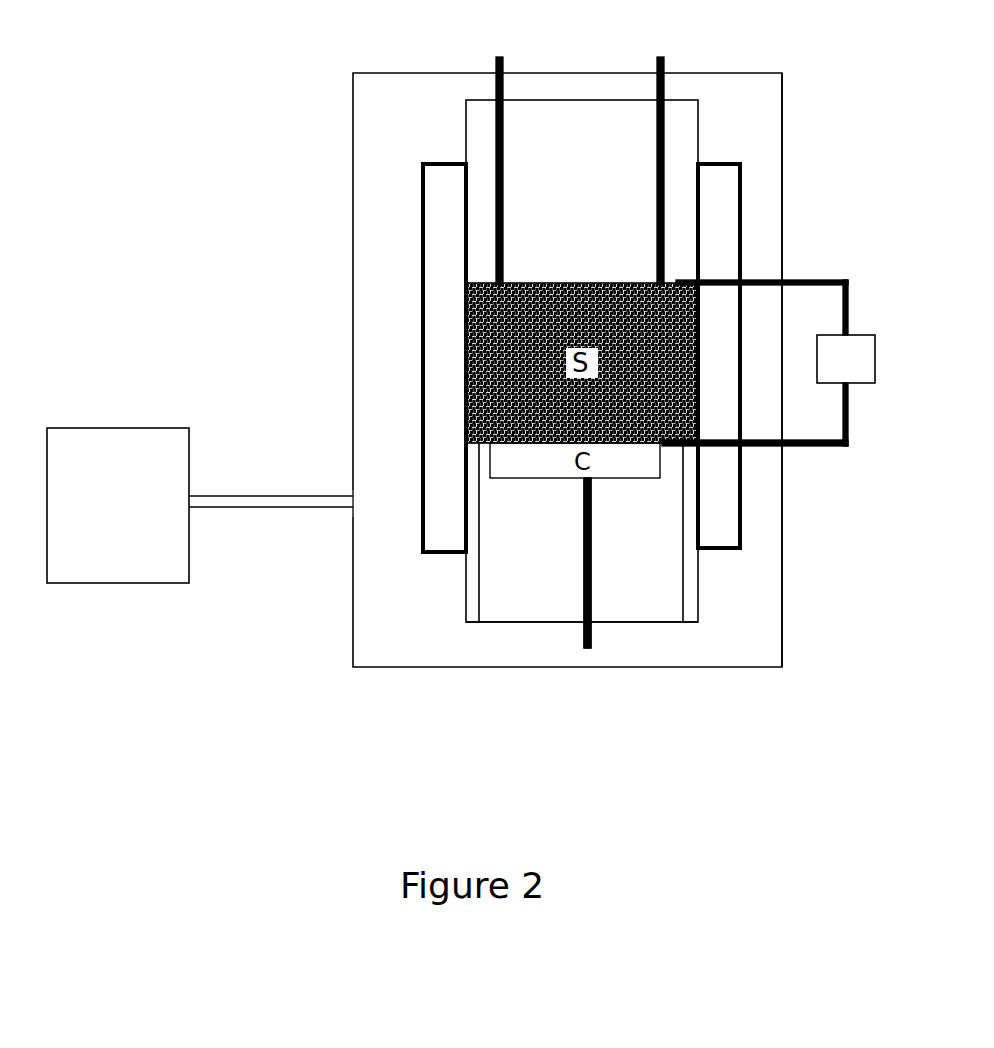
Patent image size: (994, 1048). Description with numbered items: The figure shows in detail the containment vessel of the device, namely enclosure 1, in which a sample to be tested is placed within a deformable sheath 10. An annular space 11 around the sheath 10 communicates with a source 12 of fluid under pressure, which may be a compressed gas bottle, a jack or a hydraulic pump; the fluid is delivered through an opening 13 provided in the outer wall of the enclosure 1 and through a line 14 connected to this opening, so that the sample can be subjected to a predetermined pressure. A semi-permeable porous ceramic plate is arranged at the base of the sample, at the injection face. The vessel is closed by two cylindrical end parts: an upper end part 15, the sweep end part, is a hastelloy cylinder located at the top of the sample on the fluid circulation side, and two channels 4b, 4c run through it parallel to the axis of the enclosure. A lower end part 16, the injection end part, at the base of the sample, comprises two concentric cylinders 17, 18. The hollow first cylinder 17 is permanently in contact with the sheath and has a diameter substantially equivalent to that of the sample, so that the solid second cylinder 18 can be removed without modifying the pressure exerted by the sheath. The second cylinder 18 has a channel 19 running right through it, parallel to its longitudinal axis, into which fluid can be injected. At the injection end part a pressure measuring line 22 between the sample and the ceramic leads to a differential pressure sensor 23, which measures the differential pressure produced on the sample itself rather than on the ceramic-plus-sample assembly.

The enclosure 1 is at (783, 131).
The channel 4b is at (494, 57).
The channel 4c is at (666, 57).
The deformable sheath 10 is at (741, 523).
The annular space 11 is at (377, 192).
The source of fluid under pressure 12 is at (103, 572).
The opening 13 is at (352, 518).
The line 14 is at (258, 500).
The upper end part 15 is at (588, 157).
The lower end part 16 is at (750, 750).
The first cylinder 17 is at (474, 612).
The second cylinder 18 is at (609, 597).
The channel 19 is at (592, 538).
The pressure measuring line 22 is at (680, 444).
The differential pressure sensor 23 is at (861, 373).